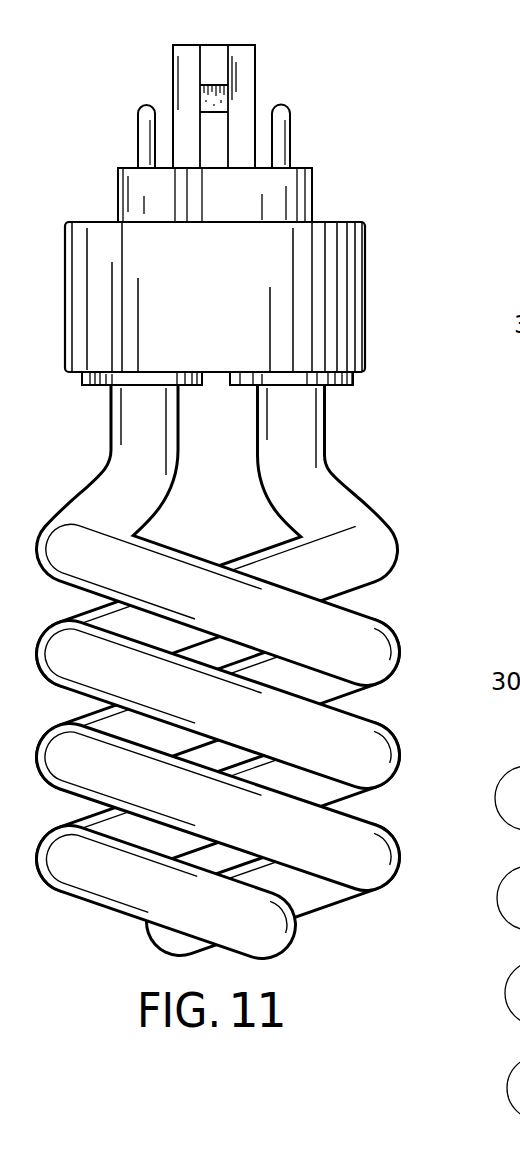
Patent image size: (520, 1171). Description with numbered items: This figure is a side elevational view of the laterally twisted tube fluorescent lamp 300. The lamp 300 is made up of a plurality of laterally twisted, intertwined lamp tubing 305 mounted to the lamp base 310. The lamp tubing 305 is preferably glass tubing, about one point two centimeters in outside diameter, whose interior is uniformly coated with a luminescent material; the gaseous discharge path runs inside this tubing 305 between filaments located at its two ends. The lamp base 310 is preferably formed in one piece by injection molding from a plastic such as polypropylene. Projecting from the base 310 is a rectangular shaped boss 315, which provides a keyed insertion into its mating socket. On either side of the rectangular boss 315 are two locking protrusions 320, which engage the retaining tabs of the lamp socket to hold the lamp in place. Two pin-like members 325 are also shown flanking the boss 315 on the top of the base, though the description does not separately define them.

The laterally twisted fluorescent lamp 300 is at (271, 487).
The laterally twisted intertwined lamp tubing 305 is at (333, 478).
The lamp base 310 is at (365, 350).
The rectangular shaped boss 315 is at (255, 68).
The locking protrusions 320 is at (200, 98).
The connector pins 325 is at (137, 127).